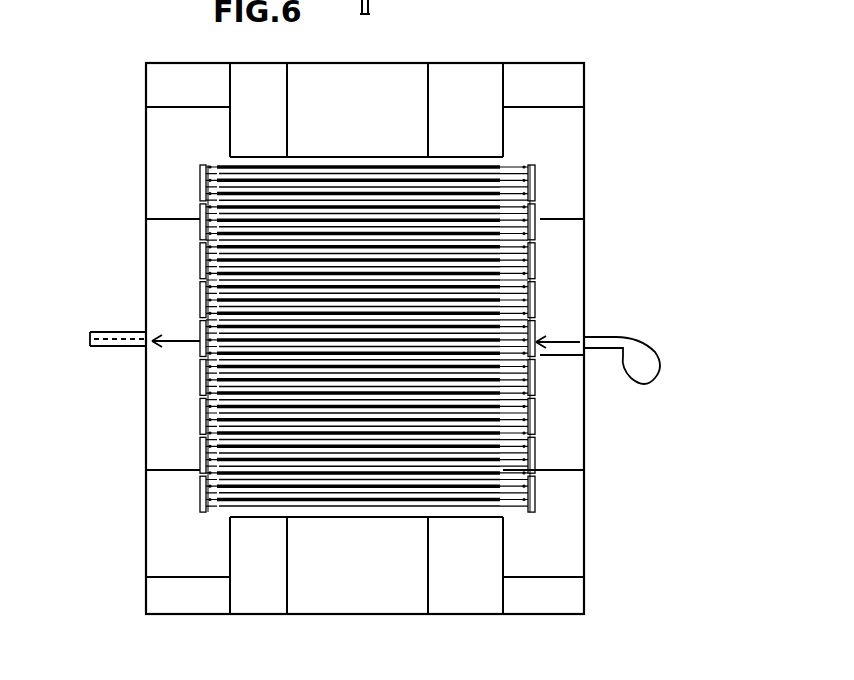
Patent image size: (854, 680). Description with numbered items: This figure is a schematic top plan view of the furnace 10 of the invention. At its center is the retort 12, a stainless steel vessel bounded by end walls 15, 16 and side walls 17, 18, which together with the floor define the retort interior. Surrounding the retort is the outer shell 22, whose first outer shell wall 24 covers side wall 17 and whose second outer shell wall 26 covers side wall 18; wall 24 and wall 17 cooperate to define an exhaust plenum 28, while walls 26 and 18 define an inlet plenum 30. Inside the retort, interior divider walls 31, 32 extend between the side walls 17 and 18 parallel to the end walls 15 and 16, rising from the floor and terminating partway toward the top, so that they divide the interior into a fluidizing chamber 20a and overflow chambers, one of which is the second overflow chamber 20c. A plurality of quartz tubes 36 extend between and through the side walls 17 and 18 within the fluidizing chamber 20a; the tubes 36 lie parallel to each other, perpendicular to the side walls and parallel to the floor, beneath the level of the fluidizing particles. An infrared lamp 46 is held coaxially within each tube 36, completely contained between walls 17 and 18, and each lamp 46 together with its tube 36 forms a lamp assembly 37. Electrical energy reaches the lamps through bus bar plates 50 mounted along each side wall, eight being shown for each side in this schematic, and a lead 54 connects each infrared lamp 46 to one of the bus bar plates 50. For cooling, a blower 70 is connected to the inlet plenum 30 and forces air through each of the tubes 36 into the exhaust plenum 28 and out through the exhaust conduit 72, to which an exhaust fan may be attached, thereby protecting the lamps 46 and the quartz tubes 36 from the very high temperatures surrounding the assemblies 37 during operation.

The furnace 10 is at (138, 222).
The retort 12 is at (472, 56).
The end wall 15 is at (333, 63).
The end wall 16 is at (358, 614).
The side wall 17 is at (230, 90).
The side wall 18 is at (506, 116).
The fluidizing chamber 20a is at (485, 118).
The second overflow chamber 20c is at (487, 569).
The outer shell 22 is at (154, 50).
The first outer shell wall 24 is at (146, 160).
The second outer shell wall 26 is at (584, 154).
The exhaust plenum 28 is at (193, 574).
The inlet plenum 30 is at (542, 569).
The interior divider wall 31 is at (367, 327).
The interior divider wall 32 is at (342, 518).
The quartz tube 36 is at (274, 158).
The lamp assembly 37 is at (367, 327).
The infrared lamp 46 is at (412, 172).
The bus bar plate 50 is at (200, 200).
The lead 54 is at (212, 166).
The blower 70 is at (630, 340).
The exhaust conduit 72 is at (98, 334).